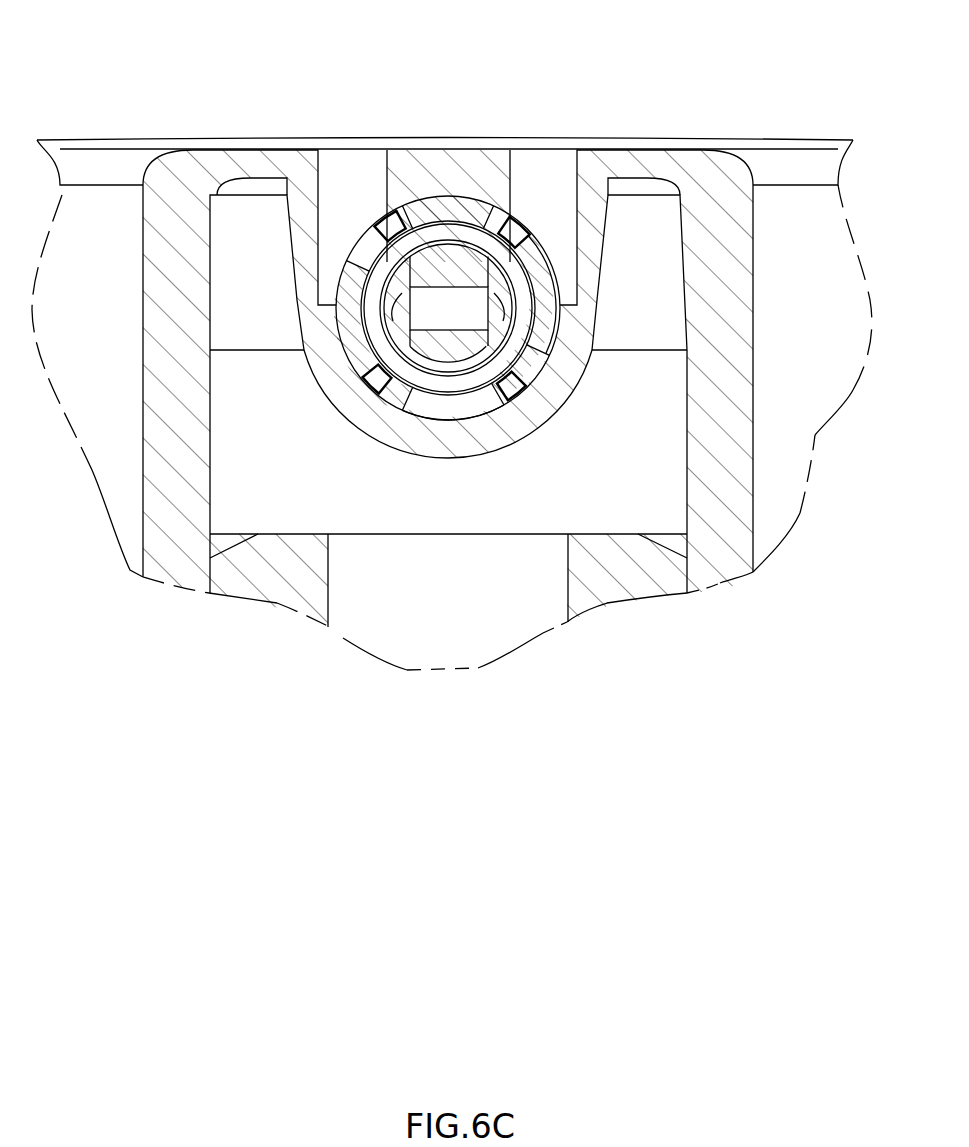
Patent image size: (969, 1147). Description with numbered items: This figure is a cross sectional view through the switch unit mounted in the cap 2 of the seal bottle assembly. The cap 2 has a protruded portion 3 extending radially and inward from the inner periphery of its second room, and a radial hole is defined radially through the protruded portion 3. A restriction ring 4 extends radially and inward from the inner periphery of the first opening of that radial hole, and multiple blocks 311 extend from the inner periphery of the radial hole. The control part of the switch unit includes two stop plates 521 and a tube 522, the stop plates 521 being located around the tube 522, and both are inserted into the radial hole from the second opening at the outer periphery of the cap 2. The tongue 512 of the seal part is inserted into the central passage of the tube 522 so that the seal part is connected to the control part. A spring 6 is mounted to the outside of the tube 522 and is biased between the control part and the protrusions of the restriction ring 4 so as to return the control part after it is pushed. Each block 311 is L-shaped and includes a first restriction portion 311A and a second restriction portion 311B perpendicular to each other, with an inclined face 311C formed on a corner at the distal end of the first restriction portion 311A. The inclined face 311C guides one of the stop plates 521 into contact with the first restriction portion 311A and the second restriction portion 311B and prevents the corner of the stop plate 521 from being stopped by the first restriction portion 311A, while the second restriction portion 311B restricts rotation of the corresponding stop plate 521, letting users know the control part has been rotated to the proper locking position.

The cap 2 is at (778, 140).
The protruded portion 3 is at (293, 232).
The restriction ring 4 is at (366, 247).
The spring 6 is at (424, 239).
The block 311 is at (443, 508).
The first restriction portion 311A is at (440, 409).
The second restriction portion 311B is at (398, 389).
The inclined face 311C is at (513, 391).
The tongue 512 is at (455, 262).
The stop plate 521 is at (532, 246).
The tube 522 is at (387, 338).